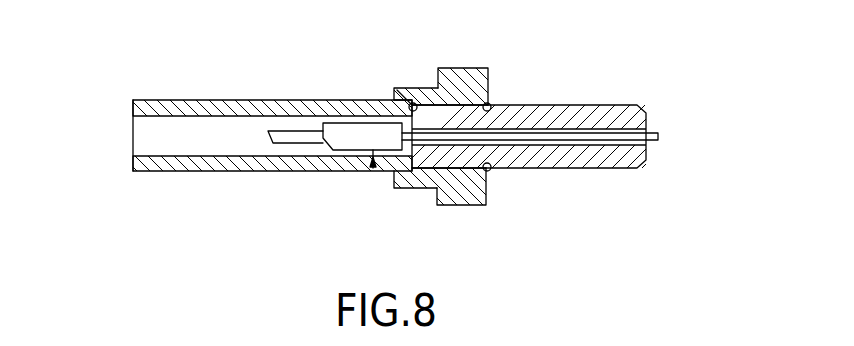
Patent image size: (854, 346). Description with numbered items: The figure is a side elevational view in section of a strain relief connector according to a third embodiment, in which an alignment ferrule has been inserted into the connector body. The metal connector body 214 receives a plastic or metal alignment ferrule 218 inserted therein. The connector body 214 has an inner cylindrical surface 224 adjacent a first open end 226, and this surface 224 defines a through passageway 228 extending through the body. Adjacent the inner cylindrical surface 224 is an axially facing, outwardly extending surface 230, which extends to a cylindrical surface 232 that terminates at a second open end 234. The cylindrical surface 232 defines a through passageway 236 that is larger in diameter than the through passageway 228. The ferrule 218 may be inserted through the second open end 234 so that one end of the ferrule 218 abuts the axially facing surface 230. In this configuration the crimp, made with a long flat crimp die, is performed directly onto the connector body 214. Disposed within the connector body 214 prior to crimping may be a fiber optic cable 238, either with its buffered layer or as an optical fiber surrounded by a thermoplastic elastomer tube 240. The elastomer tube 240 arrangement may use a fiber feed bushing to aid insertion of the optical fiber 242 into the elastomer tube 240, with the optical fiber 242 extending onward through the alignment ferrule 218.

The connector body 214 is at (460, 207).
The alignment ferrule 218 is at (627, 171).
The inner cylindrical surface 224 is at (138, 158).
The first open end 226 is at (131, 171).
The through passageway 228 is at (146, 139).
The axially facing outwardly extending surface 230 is at (395, 89).
The cylindrical surface 232 is at (489, 104).
The second open end 234 is at (487, 198).
The through passageway 236 is at (489, 170).
The fiber optic cable 238 is at (373, 171).
The thermoplastic elastomer tube 240 is at (343, 147).
The optical fiber 242 is at (661, 138).